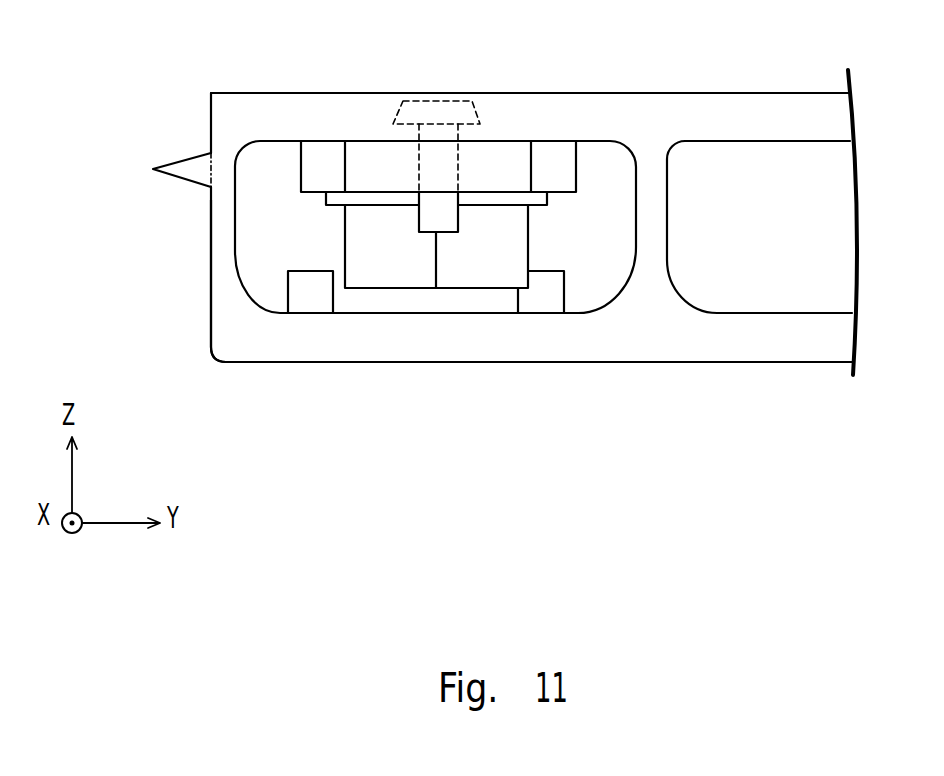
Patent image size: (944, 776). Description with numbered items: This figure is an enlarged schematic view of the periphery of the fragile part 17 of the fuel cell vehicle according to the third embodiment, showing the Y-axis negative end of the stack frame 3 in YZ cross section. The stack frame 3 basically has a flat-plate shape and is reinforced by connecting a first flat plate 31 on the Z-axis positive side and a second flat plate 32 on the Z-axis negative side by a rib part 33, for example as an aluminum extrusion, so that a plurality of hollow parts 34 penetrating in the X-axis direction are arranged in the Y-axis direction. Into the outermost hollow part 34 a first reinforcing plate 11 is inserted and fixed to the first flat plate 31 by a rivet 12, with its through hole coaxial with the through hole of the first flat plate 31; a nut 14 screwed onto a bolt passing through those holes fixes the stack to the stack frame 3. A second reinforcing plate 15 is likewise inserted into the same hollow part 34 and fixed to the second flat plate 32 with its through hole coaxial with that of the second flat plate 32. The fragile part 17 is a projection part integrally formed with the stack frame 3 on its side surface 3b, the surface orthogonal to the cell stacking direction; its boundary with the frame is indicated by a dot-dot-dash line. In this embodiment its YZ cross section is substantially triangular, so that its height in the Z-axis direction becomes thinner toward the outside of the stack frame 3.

The stack frame 3 is at (678, 87).
The first flat plate 31 is at (770, 105).
The second flat plate 32 is at (786, 355).
The side surface 3b is at (210, 293).
The rib part 33 is at (668, 237).
The hollow part 34 is at (633, 247).
The first reinforcing plate 11 is at (557, 150).
The rivet 12 is at (439, 101).
The nut 14 is at (521, 235).
The second reinforcing plate 15 is at (311, 303).
The fragile part 17 is at (172, 160).